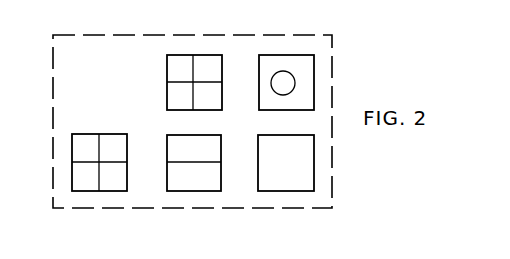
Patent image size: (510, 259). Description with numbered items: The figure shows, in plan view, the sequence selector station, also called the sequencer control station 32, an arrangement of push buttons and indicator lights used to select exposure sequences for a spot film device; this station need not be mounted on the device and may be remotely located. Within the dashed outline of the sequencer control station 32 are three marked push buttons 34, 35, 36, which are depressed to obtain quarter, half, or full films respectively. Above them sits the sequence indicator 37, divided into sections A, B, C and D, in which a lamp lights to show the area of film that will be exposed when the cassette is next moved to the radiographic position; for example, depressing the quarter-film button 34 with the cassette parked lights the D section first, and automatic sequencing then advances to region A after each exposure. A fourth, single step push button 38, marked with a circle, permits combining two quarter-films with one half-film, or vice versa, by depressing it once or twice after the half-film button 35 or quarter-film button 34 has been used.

The sequencer control station 32 is at (211, 35).
The quarter-film push button 34 is at (127, 170).
The half-film push button 35 is at (221, 173).
The full-film push button 36 is at (314, 171).
The sequence indicator 37 is at (167, 66).
The single step push button 38 is at (314, 63).